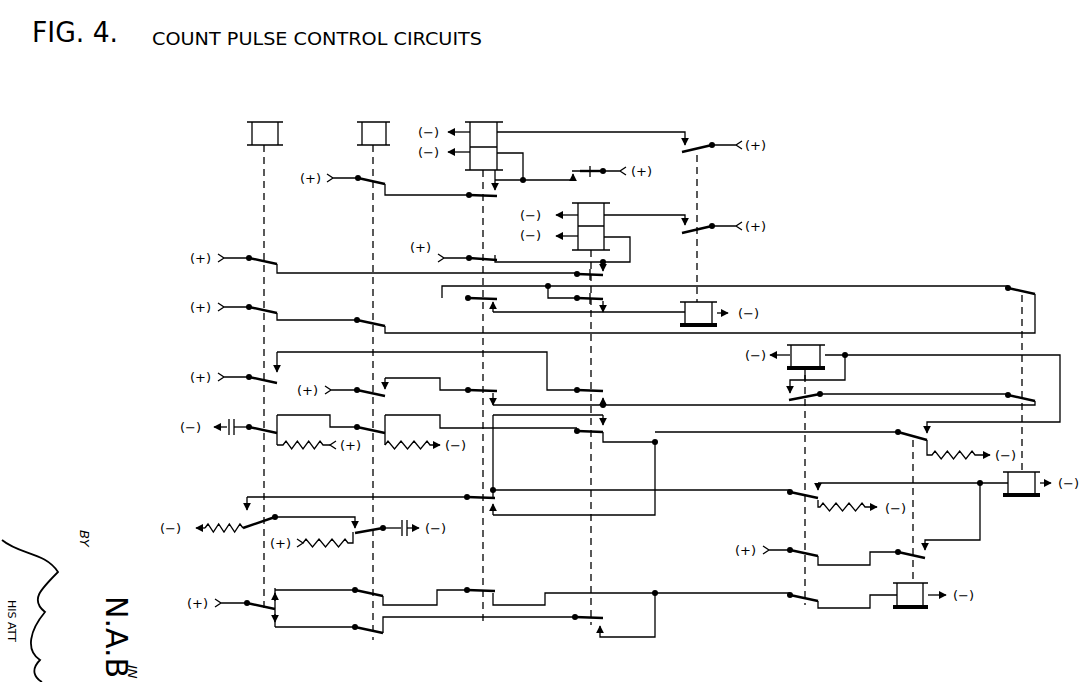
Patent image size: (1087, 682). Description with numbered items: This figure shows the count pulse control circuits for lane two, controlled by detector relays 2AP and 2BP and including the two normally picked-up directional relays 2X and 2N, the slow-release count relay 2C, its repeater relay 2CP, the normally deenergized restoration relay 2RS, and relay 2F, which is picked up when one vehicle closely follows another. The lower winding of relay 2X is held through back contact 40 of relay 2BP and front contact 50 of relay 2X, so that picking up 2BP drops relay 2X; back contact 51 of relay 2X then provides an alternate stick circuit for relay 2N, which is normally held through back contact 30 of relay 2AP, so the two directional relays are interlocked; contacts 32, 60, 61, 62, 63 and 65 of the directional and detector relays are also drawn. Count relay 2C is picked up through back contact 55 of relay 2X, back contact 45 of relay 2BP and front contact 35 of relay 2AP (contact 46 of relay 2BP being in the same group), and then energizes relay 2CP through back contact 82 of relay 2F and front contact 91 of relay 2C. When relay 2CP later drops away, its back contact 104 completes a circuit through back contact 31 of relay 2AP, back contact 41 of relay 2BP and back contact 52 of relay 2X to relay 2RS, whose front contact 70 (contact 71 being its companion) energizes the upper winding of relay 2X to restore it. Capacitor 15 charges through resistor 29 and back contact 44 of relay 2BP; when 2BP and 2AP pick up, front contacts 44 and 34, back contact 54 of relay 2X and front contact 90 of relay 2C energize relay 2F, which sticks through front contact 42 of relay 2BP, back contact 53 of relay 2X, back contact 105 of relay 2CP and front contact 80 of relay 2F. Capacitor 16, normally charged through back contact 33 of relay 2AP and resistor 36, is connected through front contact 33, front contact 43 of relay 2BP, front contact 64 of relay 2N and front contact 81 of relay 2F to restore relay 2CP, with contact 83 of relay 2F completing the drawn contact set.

The relay 2AP is at (265, 121).
The relay 2BP is at (373, 121).
The directional relay 2X is at (484, 133).
The directional relay 2N is at (577, 211).
The restoration relay 2RS is at (712, 306).
The relay 2F is at (820, 350).
The repeater relay 2CP is at (1035, 472).
The count relay 2C is at (923, 583).
The capacitor 15 is at (409, 524).
The capacitor 16 is at (227, 424).
The resistor 29 is at (328, 551).
The resistor 36 is at (303, 457).
The back contact 30 of relay 2AP 30 is at (256, 269).
The back contact 31 of relay 2AP 31 is at (256, 319).
The contact 32 of relay 2AP 32 is at (256, 388).
The contact 33 of relay 2AP 33 is at (256, 438).
The front contact 34 of relay 2AP 34 is at (241, 535).
The front contact 35 of relay 2AP 35 is at (251, 616).
The back contact 40 of relay 2BP 40 is at (362, 189).
The back contact 41 of relay 2BP 41 is at (386, 323).
The front contact 42 of relay 2BP 42 is at (361, 402).
The front contact 43 of relay 2BP 43 is at (385, 442).
The contact 44 of relay 2BP 44 is at (376, 541).
The back contact 45 of relay 2BP 45 is at (384, 592).
The contact 46 of relay 2BP 46 is at (384, 635).
The front contact 50 of relay 2X 50 is at (475, 207).
The back contact 51 of relay 2X 51 is at (472, 261).
The back contact 52 of relay 2X 52 is at (475, 308).
The back contact 53 of relay 2X 53 is at (476, 402).
The back contact 54 of relay 2X 54 is at (470, 493).
The back contact 55 of relay 2X 55 is at (470, 587).
The contact 60 of relay 2N 60 is at (595, 181).
The contact 61 of relay 2N 61 is at (604, 276).
The contact 62 of relay 2N 62 is at (605, 299).
The contact 63 of relay 2N 63 is at (598, 389).
The front contact 64 of relay 2N 64 is at (580, 434).
The contact 65 of relay 2N 65 is at (583, 616).
The front contact 70 of relay 2RS 70 is at (708, 157).
The contact 71 of relay 2RS 71 is at (708, 238).
The front contact 80 of relay 2F 80 is at (788, 398).
The front contact 81 of relay 2F 81 is at (797, 506).
The back contact 82 of relay 2F 82 is at (796, 561).
The contact 83 of relay 2F 83 is at (796, 607).
The front contact 90 of relay 2C 90 is at (903, 438).
The front contact 91 of relay 2C 91 is at (905, 556).
The back contact 104 of relay 2CP 104 is at (1023, 292).
The back contact 105 of relay 2CP 105 is at (1030, 399).